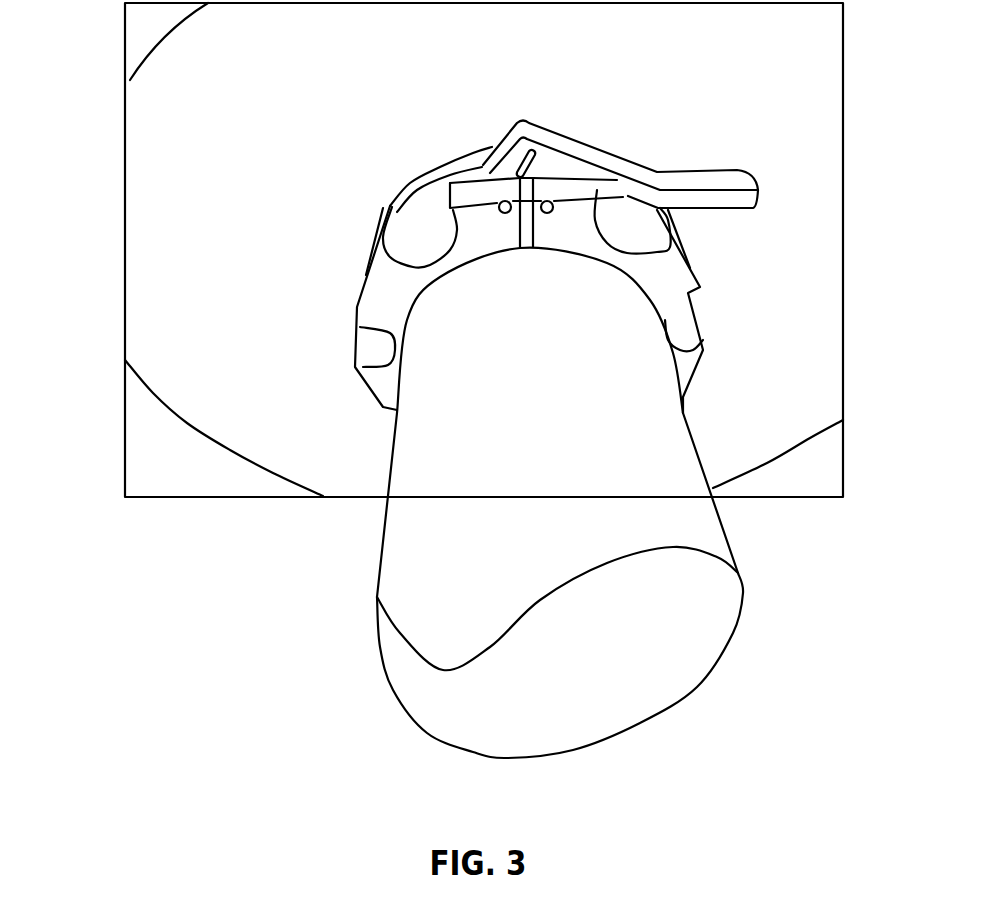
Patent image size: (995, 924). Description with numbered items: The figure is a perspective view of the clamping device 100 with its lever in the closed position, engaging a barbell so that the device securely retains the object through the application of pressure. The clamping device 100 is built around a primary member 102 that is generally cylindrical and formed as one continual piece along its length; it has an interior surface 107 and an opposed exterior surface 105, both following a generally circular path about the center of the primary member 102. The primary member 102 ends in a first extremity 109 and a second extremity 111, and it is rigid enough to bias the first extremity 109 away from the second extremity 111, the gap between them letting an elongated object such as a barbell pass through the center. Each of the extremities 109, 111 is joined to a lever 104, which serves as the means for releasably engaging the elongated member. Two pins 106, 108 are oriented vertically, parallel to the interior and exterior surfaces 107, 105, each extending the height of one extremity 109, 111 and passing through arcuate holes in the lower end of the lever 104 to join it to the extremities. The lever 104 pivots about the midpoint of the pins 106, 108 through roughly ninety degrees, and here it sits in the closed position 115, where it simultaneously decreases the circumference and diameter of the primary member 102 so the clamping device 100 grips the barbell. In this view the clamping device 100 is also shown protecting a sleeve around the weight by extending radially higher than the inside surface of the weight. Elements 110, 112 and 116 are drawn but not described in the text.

The clamping device 100 is at (522, 97).
The primary member 102 is at (387, 280).
The lever 104 is at (693, 198).
The exterior surface 105 is at (668, 322).
The pin 106 is at (497, 203).
The interior surface 107 is at (400, 323).
The pin 108 is at (550, 201).
The first extremity 109 is at (483, 227).
The cylindrical body 110 is at (366, 665).
The second extremity 111 is at (575, 223).
The base panel 112 is at (197, 203).
The closed position 115 is at (740, 158).
The cylinder wall 116 is at (417, 580).